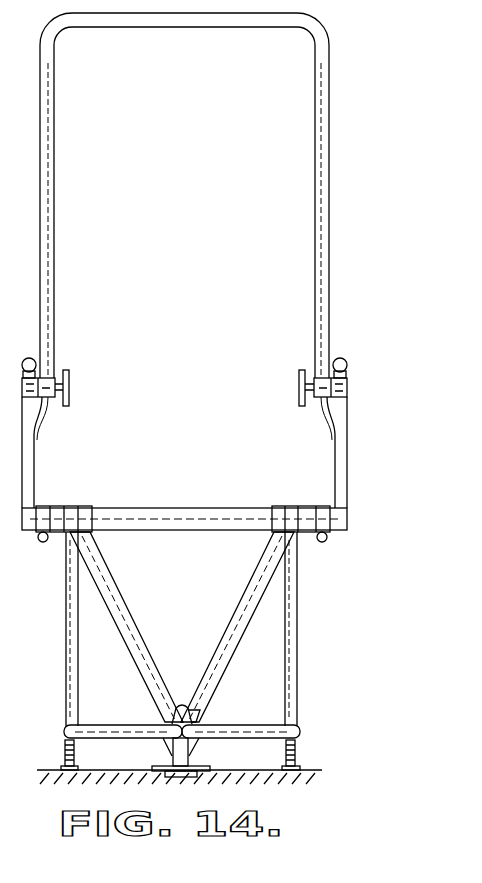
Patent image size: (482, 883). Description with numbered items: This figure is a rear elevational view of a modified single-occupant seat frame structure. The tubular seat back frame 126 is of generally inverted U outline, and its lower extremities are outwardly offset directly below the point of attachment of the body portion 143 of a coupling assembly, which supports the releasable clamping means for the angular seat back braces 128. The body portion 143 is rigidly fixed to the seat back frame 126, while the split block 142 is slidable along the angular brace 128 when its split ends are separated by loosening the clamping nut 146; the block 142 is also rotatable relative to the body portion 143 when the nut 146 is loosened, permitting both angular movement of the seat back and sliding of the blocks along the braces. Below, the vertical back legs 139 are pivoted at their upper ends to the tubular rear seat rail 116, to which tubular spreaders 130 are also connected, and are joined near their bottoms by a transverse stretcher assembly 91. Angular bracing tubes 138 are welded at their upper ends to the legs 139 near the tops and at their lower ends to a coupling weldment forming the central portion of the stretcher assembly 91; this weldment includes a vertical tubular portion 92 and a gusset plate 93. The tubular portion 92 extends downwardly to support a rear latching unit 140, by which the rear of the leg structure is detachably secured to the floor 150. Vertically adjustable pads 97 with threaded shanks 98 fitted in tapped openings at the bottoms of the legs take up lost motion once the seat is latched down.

The tubular seat back frame 126 is at (329, 133).
The split block 142 is at (346, 370).
The body portion of the coupling assembly 143 is at (322, 378).
The clamping nut 146 is at (298, 380).
The angular seat back brace 128 is at (341, 422).
The back rail 116 is at (186, 492).
The tubular spreader 130 is at (42, 543).
The back leg 139 is at (67, 613).
The angular bracing tube 138 is at (137, 634).
The vertical tubular portion 92 is at (182, 706).
The gusset plate 93 is at (200, 714).
The transverse stretcher assembly 91 is at (126, 718).
The rear latching unit 140 is at (190, 755).
The threaded shank 98 is at (297, 760).
The vertically adjustable pad 97 is at (301, 770).
The floor 150 is at (132, 760).